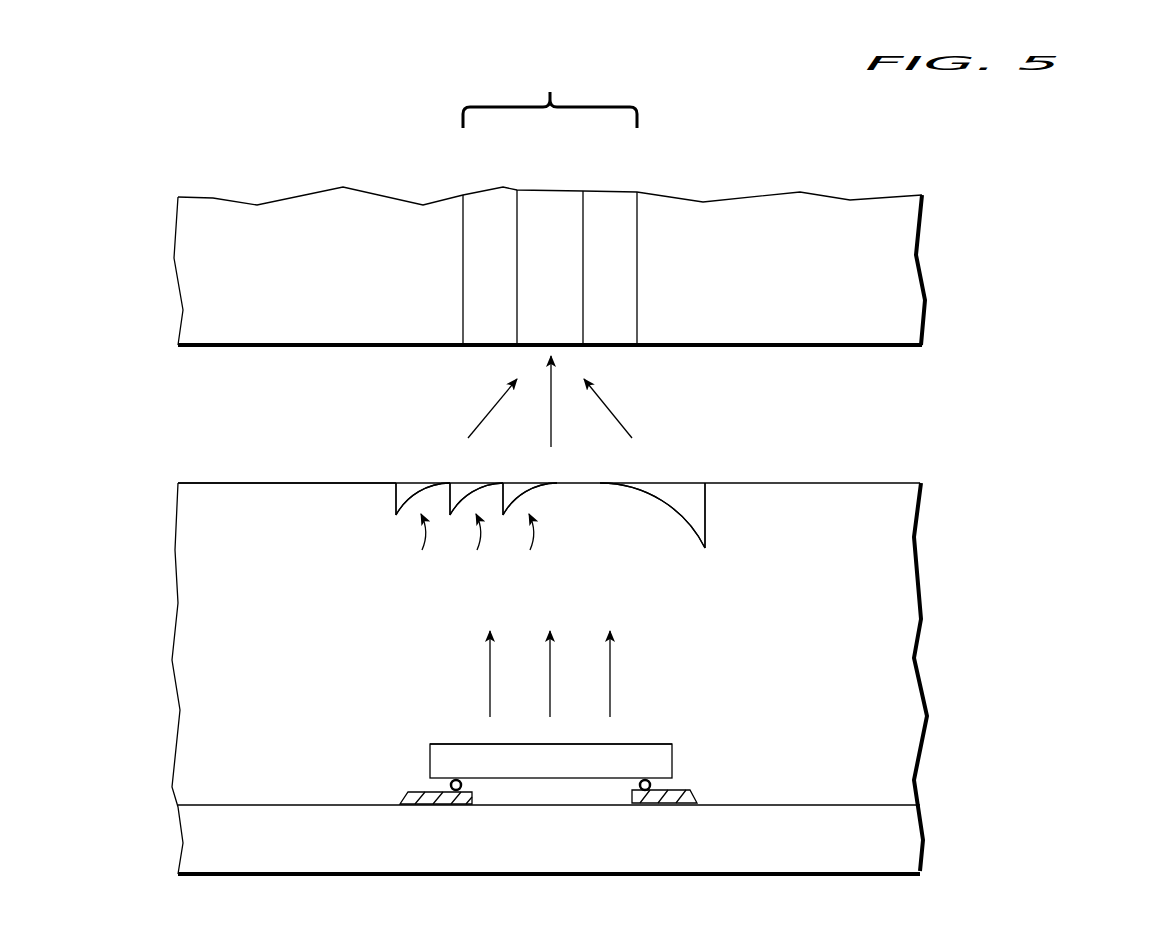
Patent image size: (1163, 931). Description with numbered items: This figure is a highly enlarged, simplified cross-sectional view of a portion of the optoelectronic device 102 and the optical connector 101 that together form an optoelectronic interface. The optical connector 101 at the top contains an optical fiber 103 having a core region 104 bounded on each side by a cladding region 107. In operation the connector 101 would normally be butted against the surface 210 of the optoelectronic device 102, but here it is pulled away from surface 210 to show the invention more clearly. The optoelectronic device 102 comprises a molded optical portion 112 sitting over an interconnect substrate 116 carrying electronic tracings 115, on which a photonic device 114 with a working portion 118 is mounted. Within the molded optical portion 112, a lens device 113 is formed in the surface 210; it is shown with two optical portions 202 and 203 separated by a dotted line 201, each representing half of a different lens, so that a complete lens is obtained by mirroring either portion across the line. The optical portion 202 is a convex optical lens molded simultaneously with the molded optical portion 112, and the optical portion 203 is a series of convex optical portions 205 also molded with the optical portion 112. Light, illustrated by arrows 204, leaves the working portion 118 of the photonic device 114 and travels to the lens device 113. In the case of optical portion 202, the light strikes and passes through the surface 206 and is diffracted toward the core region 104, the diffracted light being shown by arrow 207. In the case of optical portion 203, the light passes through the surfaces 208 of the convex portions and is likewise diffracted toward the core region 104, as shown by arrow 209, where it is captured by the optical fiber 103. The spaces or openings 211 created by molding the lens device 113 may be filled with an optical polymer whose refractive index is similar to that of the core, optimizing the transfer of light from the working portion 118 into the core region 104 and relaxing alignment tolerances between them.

The optical connector 101 is at (990, 158).
The optoelectronic device 102 is at (1060, 494).
The optical fiber 103 is at (550, 93).
The core region 104 is at (558, 197).
The cladding region 107 is at (496, 194).
The molded optical portion 112 is at (195, 709).
The lens device 113 is at (393, 396).
The photonic device 114 is at (672, 755).
The electronic tracings 115 is at (406, 793).
The interconnect substrate 116 is at (911, 842).
The working portion 118 is at (541, 738).
The dotted line 201 is at (553, 385).
The optical portion 202 is at (688, 570).
The optical portion 203 is at (355, 558).
The arrows 204 is at (487, 680).
The convex optical portions 205 is at (469, 549).
The surface 206 is at (650, 490).
The arrow 207 is at (612, 412).
The surfaces 208 is at (423, 490).
The arrow 209 is at (490, 408).
The surface 210 is at (238, 483).
The spaces or openings 211 is at (400, 483).